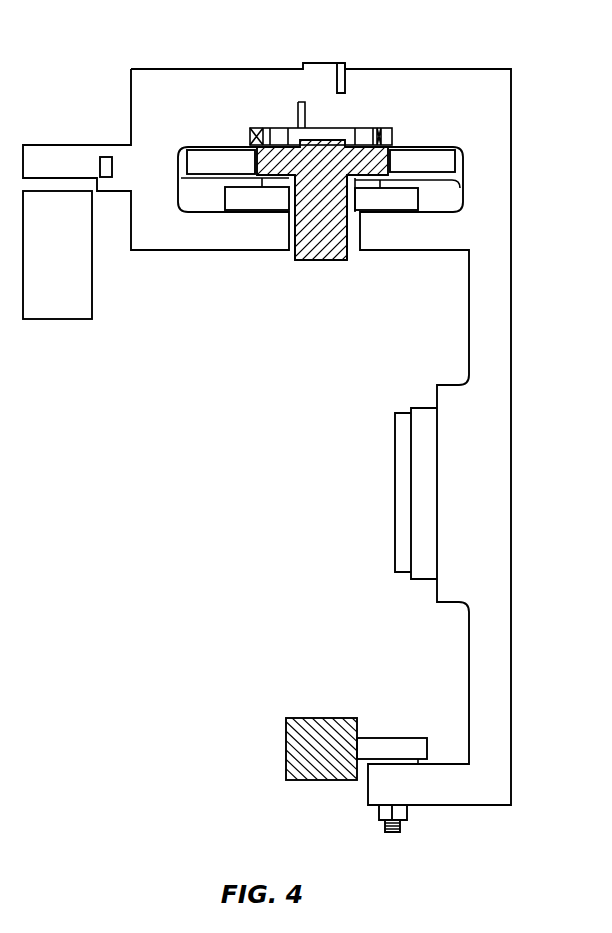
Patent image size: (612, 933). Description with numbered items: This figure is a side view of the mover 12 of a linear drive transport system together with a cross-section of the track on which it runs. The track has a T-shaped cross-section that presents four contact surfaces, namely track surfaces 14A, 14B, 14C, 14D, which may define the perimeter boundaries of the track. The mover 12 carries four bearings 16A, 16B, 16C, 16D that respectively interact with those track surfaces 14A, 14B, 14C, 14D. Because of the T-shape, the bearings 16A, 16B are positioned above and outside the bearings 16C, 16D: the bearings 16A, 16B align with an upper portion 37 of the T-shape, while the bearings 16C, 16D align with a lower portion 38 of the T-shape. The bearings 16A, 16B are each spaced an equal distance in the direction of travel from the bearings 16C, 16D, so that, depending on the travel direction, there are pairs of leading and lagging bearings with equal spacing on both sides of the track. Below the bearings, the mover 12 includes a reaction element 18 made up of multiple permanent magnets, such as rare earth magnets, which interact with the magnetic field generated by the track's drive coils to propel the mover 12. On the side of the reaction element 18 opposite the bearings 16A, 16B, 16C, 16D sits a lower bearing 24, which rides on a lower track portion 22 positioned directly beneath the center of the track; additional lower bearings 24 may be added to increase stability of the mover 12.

The mover 12 is at (512, 115).
The track surface 14A is at (258, 150).
The track surface 14B is at (380, 150).
The track surface 14C is at (305, 200).
The track surface 14D is at (340, 200).
The bearing 16A is at (215, 165).
The bearing 16B is at (425, 160).
The bearing 16C is at (258, 198).
The bearing 16D is at (382, 200).
The reaction element 18 is at (395, 492).
The lower track portion 22 is at (323, 718).
The lower bearing 24 is at (366, 738).
The upper portion 37 is at (320, 128).
The lower portion 38 is at (320, 262).